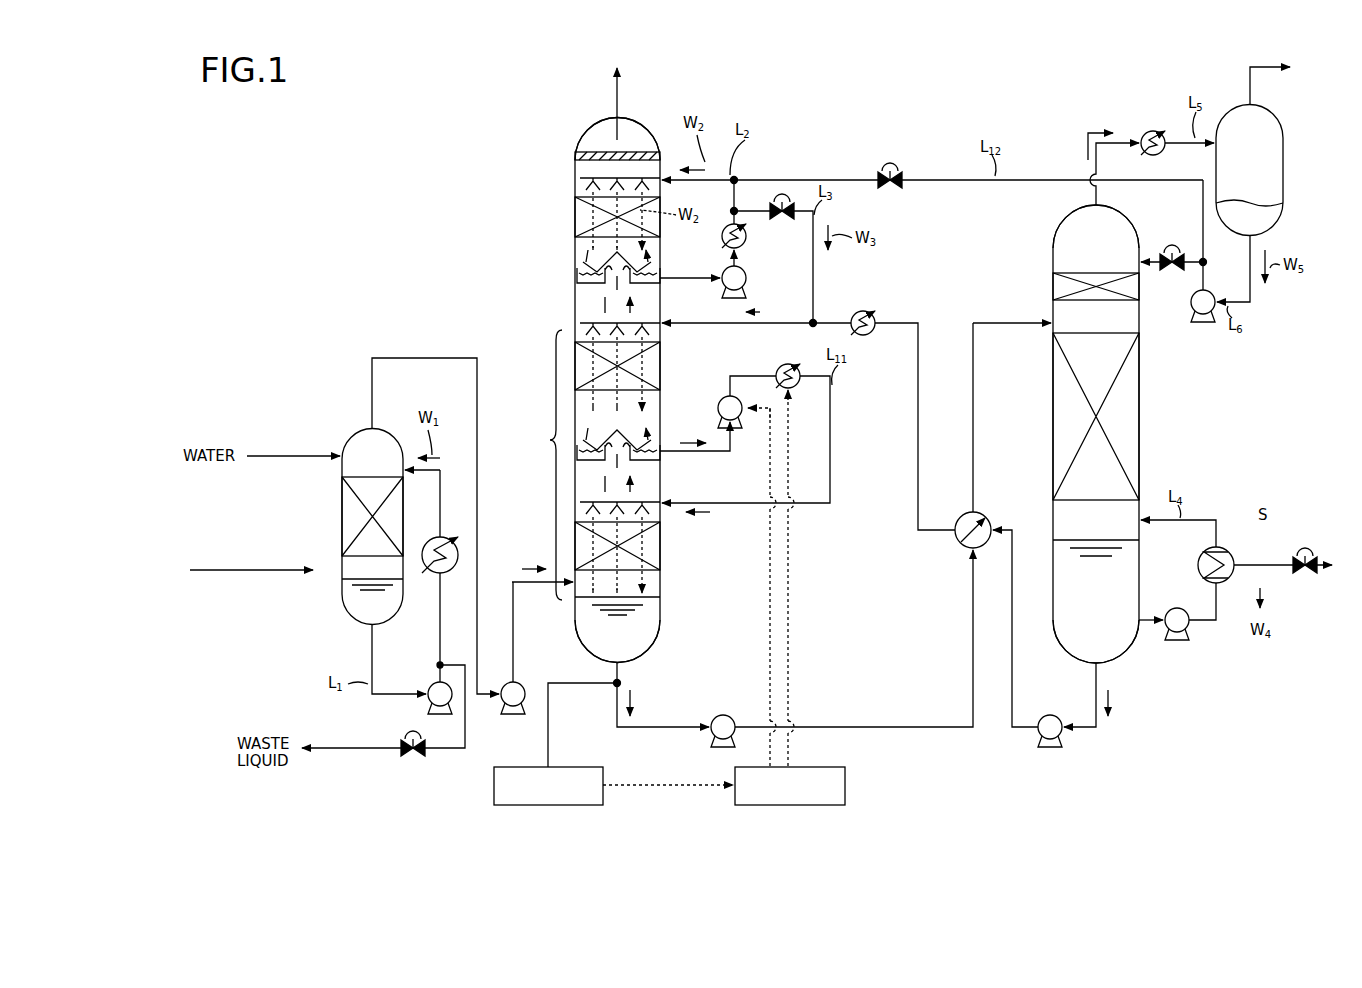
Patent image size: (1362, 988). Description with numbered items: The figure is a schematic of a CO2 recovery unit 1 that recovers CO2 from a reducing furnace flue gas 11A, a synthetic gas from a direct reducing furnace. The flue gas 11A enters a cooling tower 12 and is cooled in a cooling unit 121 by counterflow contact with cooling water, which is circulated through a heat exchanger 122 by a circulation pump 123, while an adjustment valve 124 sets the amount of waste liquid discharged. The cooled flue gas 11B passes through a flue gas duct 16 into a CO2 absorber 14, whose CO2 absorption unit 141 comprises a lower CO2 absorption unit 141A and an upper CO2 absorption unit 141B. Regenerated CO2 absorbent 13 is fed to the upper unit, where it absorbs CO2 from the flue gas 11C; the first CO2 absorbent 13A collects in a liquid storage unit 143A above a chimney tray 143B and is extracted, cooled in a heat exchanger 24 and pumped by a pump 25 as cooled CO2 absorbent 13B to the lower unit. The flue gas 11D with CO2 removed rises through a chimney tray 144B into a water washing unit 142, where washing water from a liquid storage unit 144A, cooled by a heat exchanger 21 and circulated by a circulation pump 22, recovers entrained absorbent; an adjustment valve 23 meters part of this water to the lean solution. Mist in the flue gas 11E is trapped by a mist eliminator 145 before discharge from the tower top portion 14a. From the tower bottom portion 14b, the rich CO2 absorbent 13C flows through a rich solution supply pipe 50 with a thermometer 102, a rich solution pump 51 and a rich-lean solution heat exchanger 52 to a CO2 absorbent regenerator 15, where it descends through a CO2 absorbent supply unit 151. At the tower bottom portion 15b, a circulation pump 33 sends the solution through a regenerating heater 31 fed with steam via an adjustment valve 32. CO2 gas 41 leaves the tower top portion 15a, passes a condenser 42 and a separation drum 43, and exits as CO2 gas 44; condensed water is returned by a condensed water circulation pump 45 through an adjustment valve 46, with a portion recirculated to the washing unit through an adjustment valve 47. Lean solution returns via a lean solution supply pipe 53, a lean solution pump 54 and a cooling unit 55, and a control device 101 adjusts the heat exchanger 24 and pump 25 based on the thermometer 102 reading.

The CO2 recovery unit 1 is at (930, 86).
The reducing furnace flue gas 11A is at (302, 565).
The cooled flue gas 11B is at (530, 566).
The flue gas 11C is at (600, 478).
The flue gas with CO2 removed 11D is at (600, 300).
The flue gas 11E is at (610, 98).
The cooling tower 12 is at (338, 428).
The cooling unit 121 is at (341, 490).
The heat exchanger 122 is at (428, 575).
The circulation pump 123 is at (436, 682).
The adjustment valve 124 is at (410, 738).
The CO2 absorbent 13 is at (1120, 708).
The first CO2 absorbent 13A is at (698, 438).
The cooled CO2 absorbent 13B is at (696, 516).
The CO2 absorbent having CO2 absorbed 13C is at (634, 690).
The CO2 absorber 14 is at (562, 152).
The tower top portion 14a is at (636, 122).
The tower bottom portion 14b is at (666, 642).
The CO2 absorption unit 141 is at (548, 440).
The lower CO2 absorption unit 141A is at (568, 545).
The upper CO2 absorption unit 141B is at (568, 373).
The water washing unit 142 is at (562, 280).
The liquid storage unit 143A is at (635, 452).
The chimney tray 143B is at (578, 433).
The liquid storage unit 144A is at (650, 272).
The chimney tray 144B is at (580, 258).
The mist eliminator 145 is at (600, 150).
The CO2 absorbent regenerator 15 is at (1152, 412).
The tower top portion 15a is at (1050, 238).
The tower bottom portion 15b is at (1122, 648).
The CO2 absorbent supply unit 151 is at (1140, 445).
The flue gas duct 16 is at (500, 640).
The heat exchanger 21 is at (748, 236).
The circulation pump 22 is at (748, 278).
The adjustment valve 23 is at (782, 200).
The heat exchanger 24 is at (787, 364).
The pump 25 is at (737, 395).
The regenerating heater 31 is at (1224, 545).
The adjustment valve 32 is at (1305, 550).
The circulation pump 33 is at (1180, 607).
The CO2 gas 41 is at (1090, 128).
The condenser 42 is at (1153, 128).
The separation drum 43 is at (1284, 165).
The CO2 gas 44 is at (1245, 66).
The condensed water circulation pump 45 is at (1212, 292).
The adjustment valve 46 is at (1172, 248).
The adjustment valve 47 is at (890, 168).
The rich solution supply pipe 50 is at (690, 725).
The rich solution pump 51 is at (723, 714).
The rich-lean solution heat exchanger 52 is at (960, 550).
The lean solution supply pipe 53 is at (1006, 700).
The lean solution pump 54 is at (1050, 714).
The cooling unit 55 is at (876, 318).
The control device 101 is at (808, 766).
The thermometer 102 is at (573, 767).